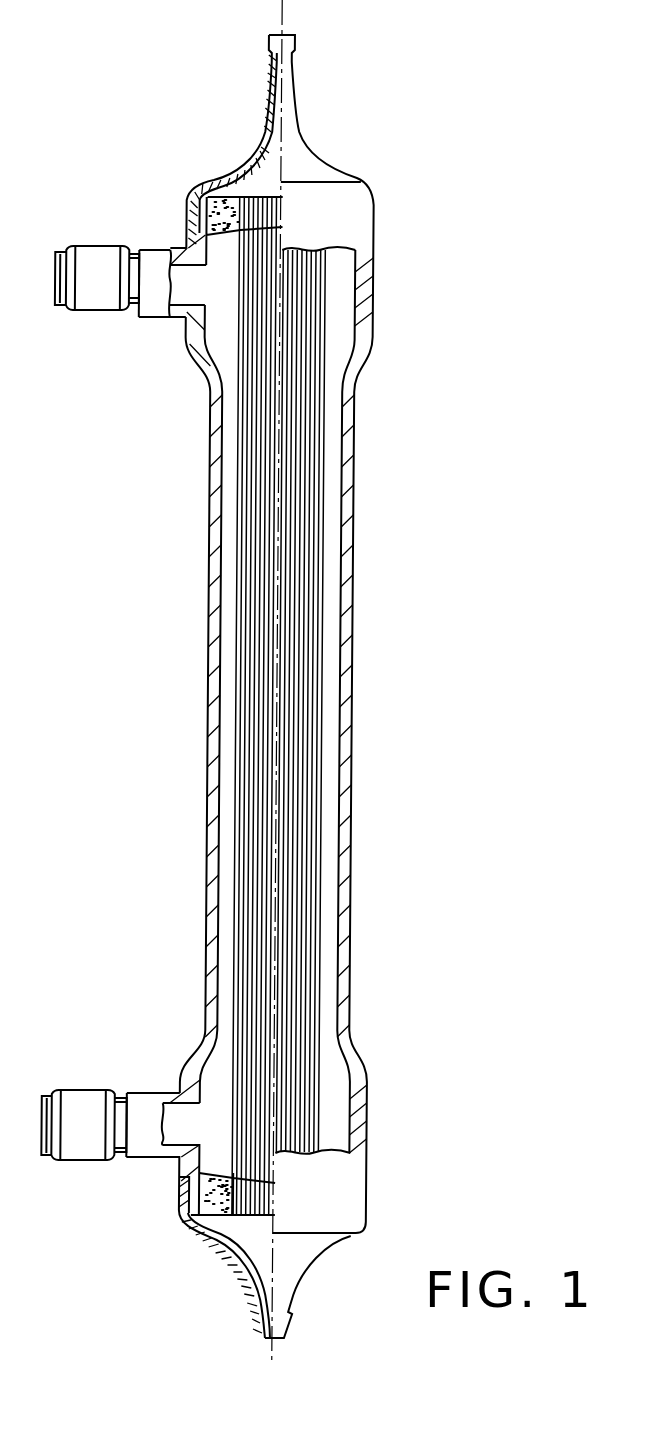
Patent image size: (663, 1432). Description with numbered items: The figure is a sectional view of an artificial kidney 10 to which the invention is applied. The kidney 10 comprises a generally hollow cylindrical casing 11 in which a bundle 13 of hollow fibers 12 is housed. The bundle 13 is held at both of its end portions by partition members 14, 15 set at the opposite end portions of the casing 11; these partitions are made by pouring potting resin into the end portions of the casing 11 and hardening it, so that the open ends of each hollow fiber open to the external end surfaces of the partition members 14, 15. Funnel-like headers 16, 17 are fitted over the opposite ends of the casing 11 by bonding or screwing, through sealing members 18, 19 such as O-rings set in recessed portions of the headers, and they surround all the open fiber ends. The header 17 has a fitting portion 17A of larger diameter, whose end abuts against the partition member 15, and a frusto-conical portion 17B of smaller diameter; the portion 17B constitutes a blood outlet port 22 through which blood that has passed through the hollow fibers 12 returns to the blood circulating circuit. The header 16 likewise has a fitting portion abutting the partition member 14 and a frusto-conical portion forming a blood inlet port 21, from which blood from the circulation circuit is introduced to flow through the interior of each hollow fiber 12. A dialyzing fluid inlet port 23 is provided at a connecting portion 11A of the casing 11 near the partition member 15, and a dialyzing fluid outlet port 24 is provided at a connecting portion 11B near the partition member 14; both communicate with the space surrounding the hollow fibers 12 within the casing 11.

The artificial kidney 10 is at (203, 163).
The casing 11 is at (353, 523).
The connecting portion 11A is at (150, 1100).
The connecting portion 11B is at (153, 303).
The hollow fibers 12 is at (326, 420).
The bundle 13 is at (328, 464).
The partition member 14 is at (232, 200).
The partition member 15 is at (230, 1212).
The header 16 is at (312, 167).
The header 17 is at (317, 1243).
The fitting portion 17A is at (208, 1225).
The frusto-conical portion 17B is at (256, 1283).
The sealing member 18 is at (200, 181).
The sealing member 19 is at (197, 1223).
The blood inlet port 21 is at (270, 33).
The blood outlet port 22 is at (268, 1338).
The dialyzing fluid inlet port 23 is at (92, 1093).
The dialyzing fluid outlet port 24 is at (95, 308).